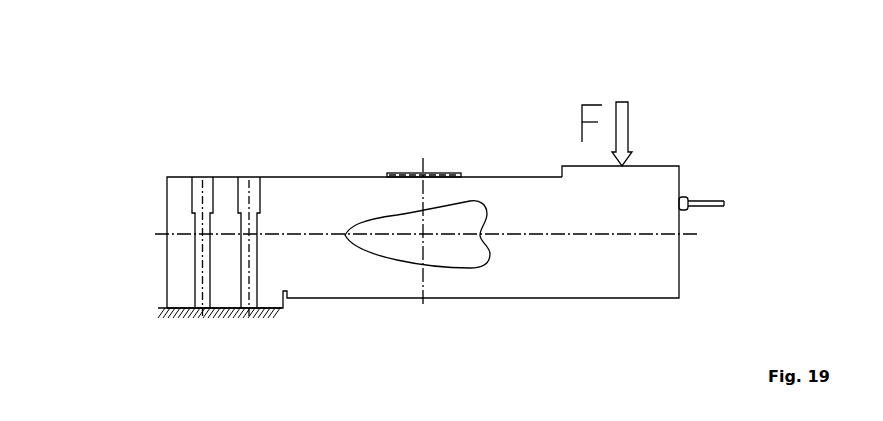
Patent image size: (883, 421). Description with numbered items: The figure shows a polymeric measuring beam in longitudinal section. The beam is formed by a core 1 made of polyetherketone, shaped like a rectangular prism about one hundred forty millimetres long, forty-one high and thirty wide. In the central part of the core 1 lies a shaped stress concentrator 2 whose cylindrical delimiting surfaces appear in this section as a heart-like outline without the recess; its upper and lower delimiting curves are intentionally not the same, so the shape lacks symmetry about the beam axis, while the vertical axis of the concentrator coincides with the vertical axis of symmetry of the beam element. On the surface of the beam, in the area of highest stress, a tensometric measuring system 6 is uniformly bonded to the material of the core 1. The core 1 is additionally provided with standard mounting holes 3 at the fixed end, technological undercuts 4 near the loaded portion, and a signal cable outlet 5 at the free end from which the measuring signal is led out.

The core 1 is at (175, 292).
The stress concentrator 2 is at (458, 285).
The mounting holes 3 is at (202, 283).
The technological undercuts 4 is at (562, 178).
The signal cable outlet 5 is at (727, 198).
The tensometric measuring system 6 is at (392, 174).